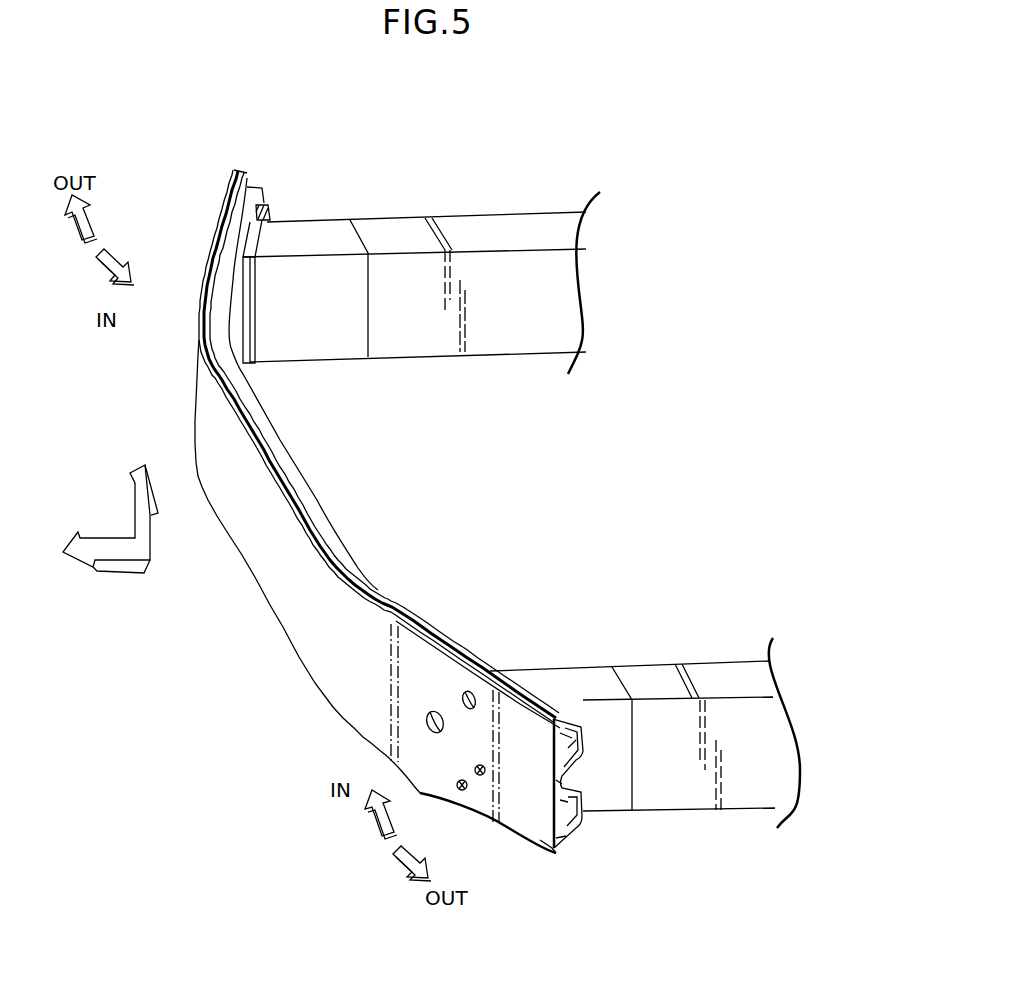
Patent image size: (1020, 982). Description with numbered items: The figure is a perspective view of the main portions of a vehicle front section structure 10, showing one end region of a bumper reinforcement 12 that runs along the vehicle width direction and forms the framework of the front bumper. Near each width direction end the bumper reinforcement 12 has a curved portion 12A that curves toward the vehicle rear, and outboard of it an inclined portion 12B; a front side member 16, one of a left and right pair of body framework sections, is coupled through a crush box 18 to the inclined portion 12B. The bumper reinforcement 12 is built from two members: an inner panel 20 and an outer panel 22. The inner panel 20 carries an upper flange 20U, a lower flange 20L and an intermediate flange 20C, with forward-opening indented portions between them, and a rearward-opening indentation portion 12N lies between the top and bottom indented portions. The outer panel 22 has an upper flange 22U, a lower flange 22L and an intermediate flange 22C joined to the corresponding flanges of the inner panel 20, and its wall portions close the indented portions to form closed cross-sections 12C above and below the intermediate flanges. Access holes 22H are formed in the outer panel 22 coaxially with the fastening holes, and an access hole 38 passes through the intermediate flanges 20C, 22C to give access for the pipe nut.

The vehicle front section structure 10 is at (430, 205).
The bumper reinforcement 12 is at (326, 466).
The curved portion 12A is at (338, 606).
The inclined portion 12B is at (224, 204).
The closed cross-section 12C is at (265, 574).
The indentation portion 12N is at (568, 753).
The front side member 16 is at (510, 350).
The crush box 18 is at (333, 225).
The inner panel 20 is at (597, 797).
The intermediate flange 20C is at (563, 782).
The lower flange 20L is at (553, 848).
The upper flange 20U is at (327, 550).
The outer panel 22 is at (578, 832).
The intermediate flange 22C is at (555, 783).
The access hole 22H is at (468, 690).
The lower flange 22L is at (556, 856).
The upper flange 22U is at (307, 522).
The access hole 38 is at (435, 735).